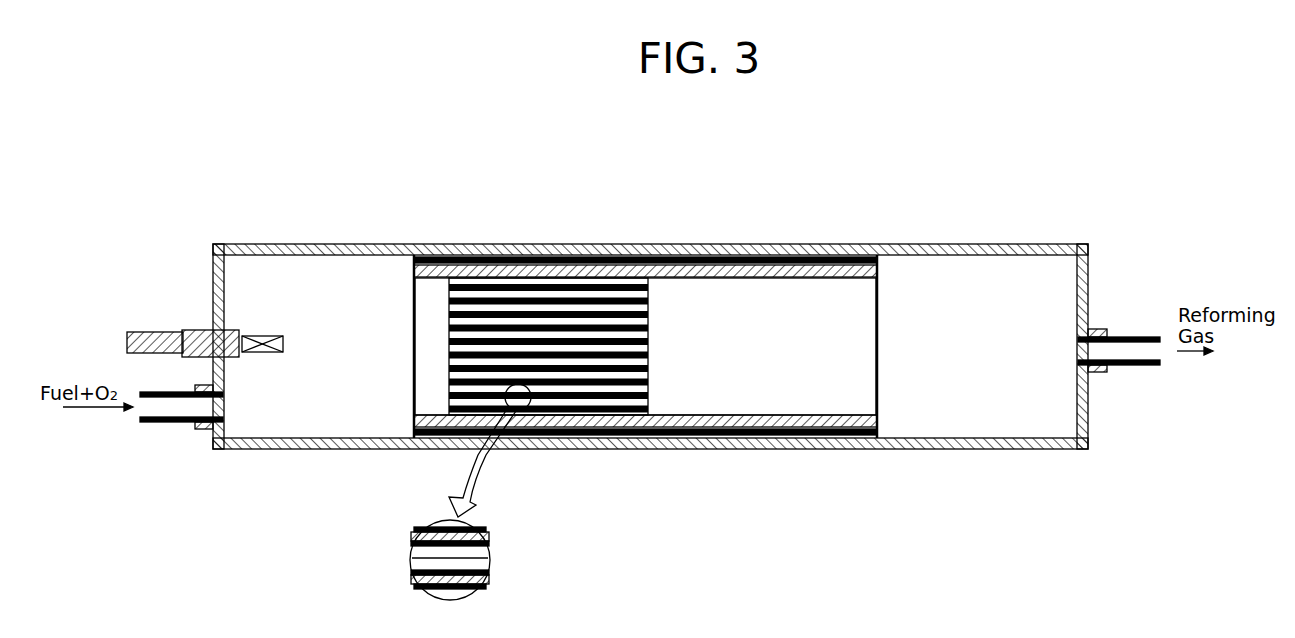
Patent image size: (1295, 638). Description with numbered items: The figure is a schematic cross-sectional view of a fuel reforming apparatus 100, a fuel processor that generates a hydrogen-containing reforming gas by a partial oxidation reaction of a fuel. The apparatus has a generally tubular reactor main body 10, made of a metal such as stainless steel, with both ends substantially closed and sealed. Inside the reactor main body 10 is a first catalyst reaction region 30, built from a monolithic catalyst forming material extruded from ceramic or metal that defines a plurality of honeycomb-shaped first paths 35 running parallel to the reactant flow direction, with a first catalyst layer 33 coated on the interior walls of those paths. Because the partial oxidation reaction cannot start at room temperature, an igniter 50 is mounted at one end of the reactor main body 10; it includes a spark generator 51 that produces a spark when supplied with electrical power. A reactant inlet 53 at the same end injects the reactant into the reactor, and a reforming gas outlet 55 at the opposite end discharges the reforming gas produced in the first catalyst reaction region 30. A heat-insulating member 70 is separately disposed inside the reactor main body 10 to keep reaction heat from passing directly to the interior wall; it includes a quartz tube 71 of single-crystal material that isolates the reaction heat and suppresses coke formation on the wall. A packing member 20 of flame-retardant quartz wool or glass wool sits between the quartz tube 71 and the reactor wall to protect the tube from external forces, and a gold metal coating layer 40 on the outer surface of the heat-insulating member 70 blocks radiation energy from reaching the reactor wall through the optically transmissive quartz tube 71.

The fuel reforming apparatus 100 is at (664, 167).
The reactor main body 10 is at (810, 250).
The packing member 20 is at (735, 450).
The first catalyst reaction region 30 is at (661, 290).
The first catalyst layer 33 is at (482, 578).
The first paths 35 is at (422, 558).
The metal coating layer 40 is at (481, 258).
The igniter 50 is at (190, 310).
The spark generator 51 is at (263, 354).
The reactant inlet 53 is at (193, 434).
The reforming gas outlet 55 is at (1107, 318).
The heat-insulating member 70 is at (804, 292).
The quartz tube 71 is at (585, 266).